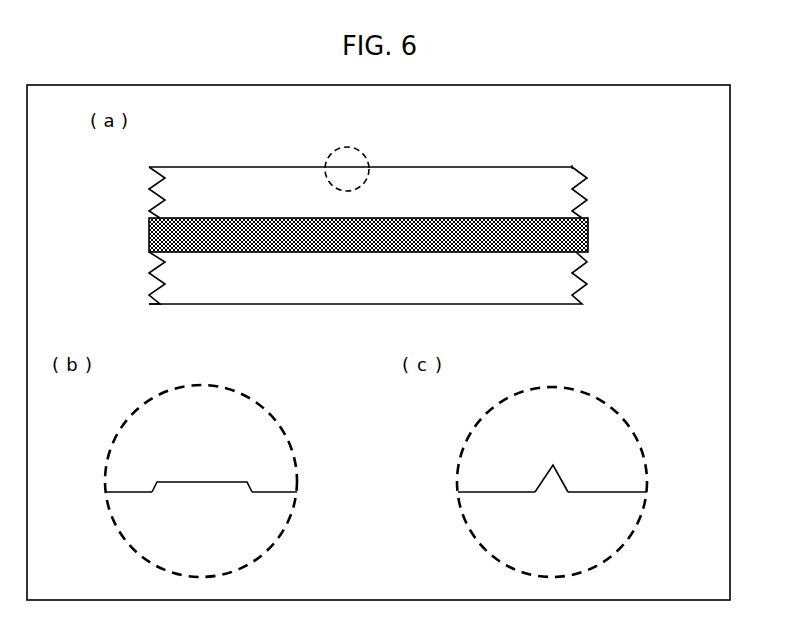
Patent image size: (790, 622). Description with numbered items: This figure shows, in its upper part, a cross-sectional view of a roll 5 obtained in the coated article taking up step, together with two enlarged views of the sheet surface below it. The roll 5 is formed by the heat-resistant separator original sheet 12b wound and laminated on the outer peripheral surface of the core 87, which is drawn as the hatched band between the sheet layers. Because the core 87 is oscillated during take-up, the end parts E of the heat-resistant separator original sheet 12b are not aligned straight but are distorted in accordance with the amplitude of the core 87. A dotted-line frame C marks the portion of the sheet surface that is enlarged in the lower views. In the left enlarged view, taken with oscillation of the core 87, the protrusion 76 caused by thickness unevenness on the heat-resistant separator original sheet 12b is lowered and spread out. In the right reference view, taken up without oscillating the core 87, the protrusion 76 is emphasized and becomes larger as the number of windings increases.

The roll 5 is at (638, 146).
The heat-resistant separator original sheet 12b is at (524, 178).
The core 87 is at (588, 236).
The end parts E is at (580, 167).
The dotted-line frame C is at (368, 151).
The protrusion 76 is at (203, 491).